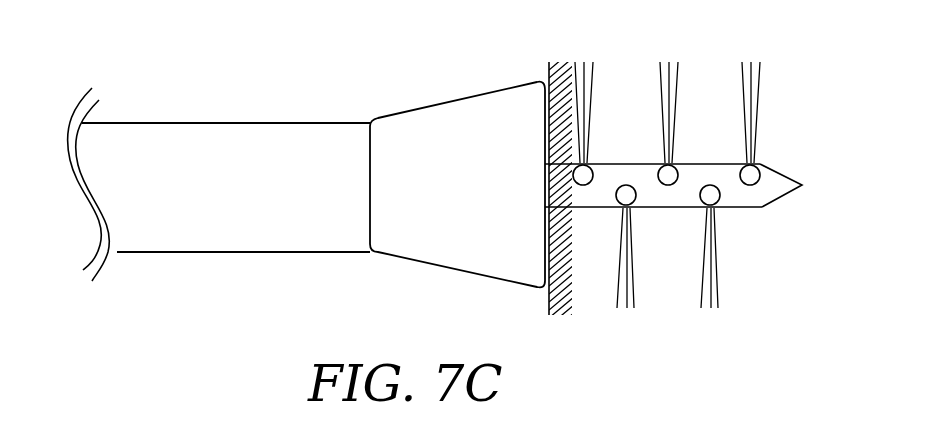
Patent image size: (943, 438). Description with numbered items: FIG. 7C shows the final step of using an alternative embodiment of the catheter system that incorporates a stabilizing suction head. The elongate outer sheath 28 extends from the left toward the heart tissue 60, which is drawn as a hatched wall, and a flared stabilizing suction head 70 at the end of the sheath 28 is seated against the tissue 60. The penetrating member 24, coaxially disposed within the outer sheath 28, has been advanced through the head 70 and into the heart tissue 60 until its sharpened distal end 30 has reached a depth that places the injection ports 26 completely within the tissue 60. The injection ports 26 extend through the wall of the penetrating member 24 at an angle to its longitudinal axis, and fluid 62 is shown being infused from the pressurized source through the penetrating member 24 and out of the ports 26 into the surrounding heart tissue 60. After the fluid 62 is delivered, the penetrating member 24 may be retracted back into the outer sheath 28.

The penetrating member 24 is at (731, 208).
The injection ports 26 is at (751, 174).
The elongate outer sheath 28 is at (202, 252).
The sharpened distal end 30 is at (785, 198).
The heart tissue 60 is at (536, 70).
The fluid 62 is at (757, 55).
The funnel guide 70 is at (452, 270).